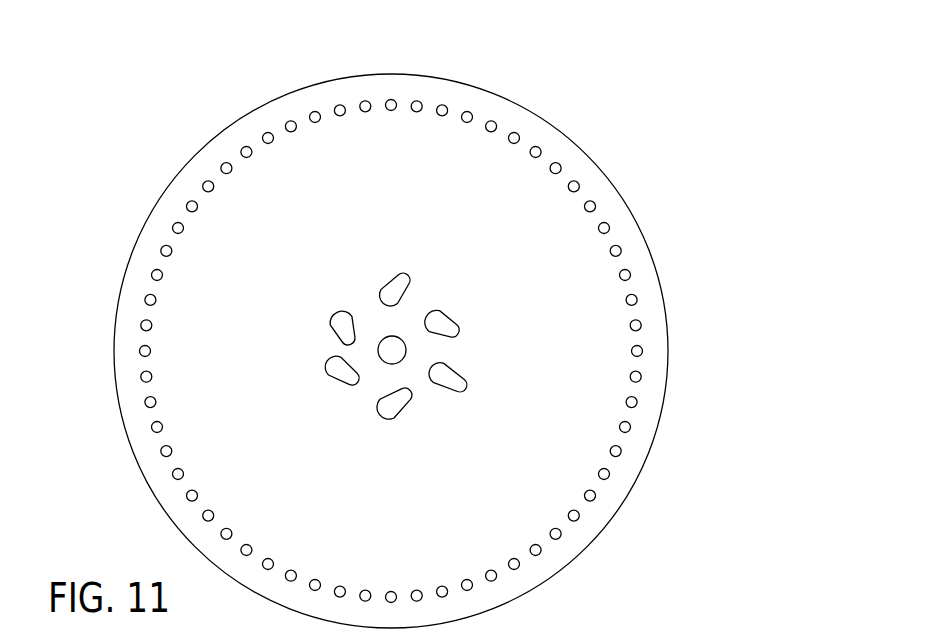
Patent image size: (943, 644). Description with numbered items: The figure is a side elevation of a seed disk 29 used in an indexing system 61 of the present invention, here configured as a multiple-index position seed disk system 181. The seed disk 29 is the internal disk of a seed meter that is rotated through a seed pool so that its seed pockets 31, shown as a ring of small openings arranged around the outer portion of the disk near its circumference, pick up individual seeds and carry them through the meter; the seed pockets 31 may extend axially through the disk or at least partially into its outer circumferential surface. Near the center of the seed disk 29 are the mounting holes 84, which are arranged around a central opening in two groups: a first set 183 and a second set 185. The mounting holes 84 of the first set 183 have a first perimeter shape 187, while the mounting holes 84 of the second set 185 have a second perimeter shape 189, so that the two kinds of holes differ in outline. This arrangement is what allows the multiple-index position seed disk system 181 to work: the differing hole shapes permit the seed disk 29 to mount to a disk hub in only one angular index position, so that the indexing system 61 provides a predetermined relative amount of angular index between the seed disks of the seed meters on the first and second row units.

The seed disk 29 is at (622, 145).
The indexing system 61 is at (538, 57).
The multiple-index position seed disk system 181 is at (578, 105).
The seed pockets 31 is at (291, 573).
The first set of mounting holes 183 is at (480, 327).
The second set of mounting holes 185 is at (432, 278).
The first perimeter shape 187 is at (343, 306).
The second perimeter shape 189 is at (386, 280).
The mounting holes 84 is at (405, 262).